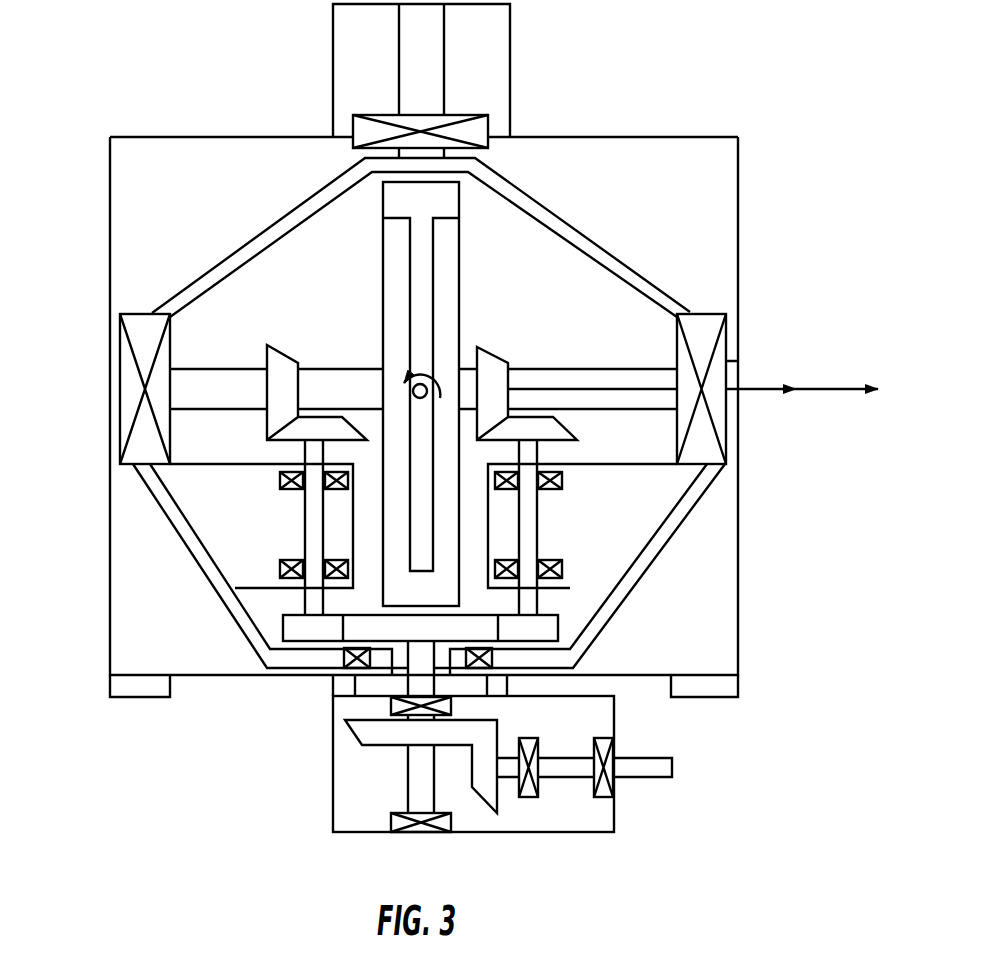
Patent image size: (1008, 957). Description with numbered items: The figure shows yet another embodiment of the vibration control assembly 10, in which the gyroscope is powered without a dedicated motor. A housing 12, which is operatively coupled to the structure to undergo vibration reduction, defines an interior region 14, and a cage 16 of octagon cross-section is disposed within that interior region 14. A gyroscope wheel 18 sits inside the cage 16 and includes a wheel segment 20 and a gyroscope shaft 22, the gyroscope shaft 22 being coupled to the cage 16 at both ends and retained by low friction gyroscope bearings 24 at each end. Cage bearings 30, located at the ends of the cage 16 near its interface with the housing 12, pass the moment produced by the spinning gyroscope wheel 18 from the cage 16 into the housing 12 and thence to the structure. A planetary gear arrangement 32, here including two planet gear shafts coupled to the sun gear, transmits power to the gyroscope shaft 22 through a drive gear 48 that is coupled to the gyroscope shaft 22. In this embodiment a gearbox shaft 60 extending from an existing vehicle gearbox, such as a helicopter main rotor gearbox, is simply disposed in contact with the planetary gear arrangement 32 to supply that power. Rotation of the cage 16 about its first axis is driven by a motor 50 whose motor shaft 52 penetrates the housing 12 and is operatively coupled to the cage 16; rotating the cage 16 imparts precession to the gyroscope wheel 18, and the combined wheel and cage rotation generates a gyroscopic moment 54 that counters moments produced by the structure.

The vibration control assembly 10 is at (138, 82).
The housing 12 is at (110, 233).
The interior region 14 is at (148, 174).
The cage 16 is at (596, 240).
The gyroscope wheel 18 is at (374, 286).
The wheel segment 20 is at (425, 273).
The gyroscope shaft 22 is at (566, 384).
The gyroscope bearings 24 is at (130, 413).
The cage bearings 30 is at (473, 115).
The planetary gear arrangement 32 is at (291, 598).
The drive gear 48 is at (283, 360).
The motor 50 is at (357, 60).
The motor shaft 52 is at (444, 31).
The gyroscopic moment 54 is at (803, 392).
The gearbox shaft 60 is at (648, 775).